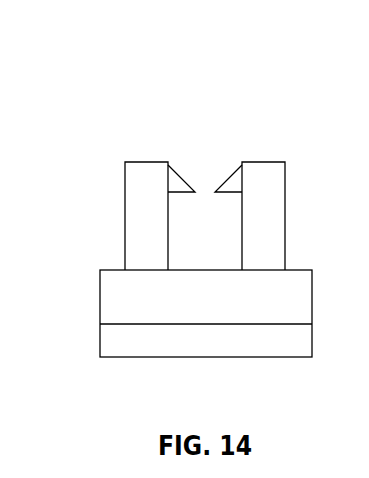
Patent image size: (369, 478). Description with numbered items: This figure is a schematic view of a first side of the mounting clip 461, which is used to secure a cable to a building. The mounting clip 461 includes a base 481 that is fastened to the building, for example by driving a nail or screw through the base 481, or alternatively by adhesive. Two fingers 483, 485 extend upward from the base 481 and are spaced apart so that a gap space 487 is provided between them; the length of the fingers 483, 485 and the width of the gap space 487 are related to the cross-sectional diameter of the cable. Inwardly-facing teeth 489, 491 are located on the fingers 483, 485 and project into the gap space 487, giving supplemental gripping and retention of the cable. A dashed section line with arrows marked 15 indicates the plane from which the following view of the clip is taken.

The section line for FIG. 15 is at (57, 70).
The mounting clip 461 is at (210, 147).
The base 481 is at (110, 301).
The finger 483 is at (138, 188).
The finger 485 is at (272, 188).
The gap space 487 is at (231, 141).
The inwardly-facing tooth 489 is at (178, 178).
The inwardly-facing tooth 491 is at (232, 178).